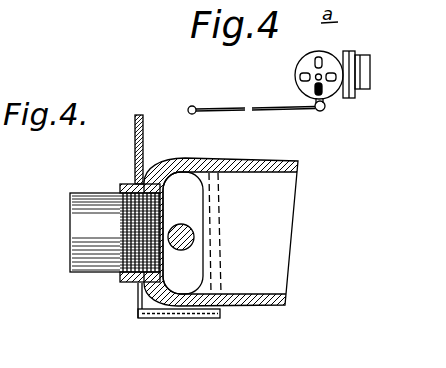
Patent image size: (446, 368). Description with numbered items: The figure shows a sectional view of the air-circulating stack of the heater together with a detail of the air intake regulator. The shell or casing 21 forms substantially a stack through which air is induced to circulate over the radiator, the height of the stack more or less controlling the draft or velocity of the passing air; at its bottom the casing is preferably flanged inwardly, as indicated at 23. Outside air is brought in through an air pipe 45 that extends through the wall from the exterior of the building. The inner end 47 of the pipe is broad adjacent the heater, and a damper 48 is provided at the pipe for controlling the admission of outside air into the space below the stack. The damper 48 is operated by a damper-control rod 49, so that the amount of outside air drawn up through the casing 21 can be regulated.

In FIG. 4, the shell or casing 21 is at (133, 141).
In FIG. 4, the inward flange 23 is at (220, 318).
In FIG. 4A, the air pipe 45 is at (363, 55).
In FIG. 4A, the inner end of the pipe 47 is at (332, 52).
In FIG. 4A, the damper 48 is at (297, 63).
In FIG. 4A, the damper-control rod 49 is at (227, 108).